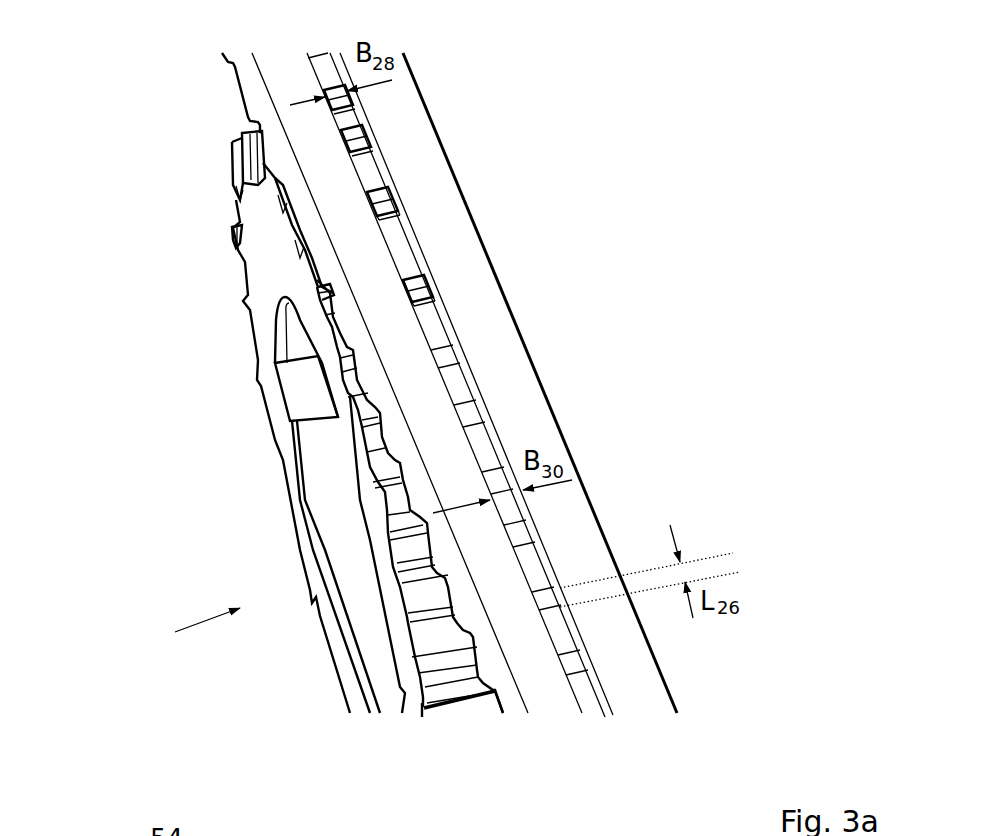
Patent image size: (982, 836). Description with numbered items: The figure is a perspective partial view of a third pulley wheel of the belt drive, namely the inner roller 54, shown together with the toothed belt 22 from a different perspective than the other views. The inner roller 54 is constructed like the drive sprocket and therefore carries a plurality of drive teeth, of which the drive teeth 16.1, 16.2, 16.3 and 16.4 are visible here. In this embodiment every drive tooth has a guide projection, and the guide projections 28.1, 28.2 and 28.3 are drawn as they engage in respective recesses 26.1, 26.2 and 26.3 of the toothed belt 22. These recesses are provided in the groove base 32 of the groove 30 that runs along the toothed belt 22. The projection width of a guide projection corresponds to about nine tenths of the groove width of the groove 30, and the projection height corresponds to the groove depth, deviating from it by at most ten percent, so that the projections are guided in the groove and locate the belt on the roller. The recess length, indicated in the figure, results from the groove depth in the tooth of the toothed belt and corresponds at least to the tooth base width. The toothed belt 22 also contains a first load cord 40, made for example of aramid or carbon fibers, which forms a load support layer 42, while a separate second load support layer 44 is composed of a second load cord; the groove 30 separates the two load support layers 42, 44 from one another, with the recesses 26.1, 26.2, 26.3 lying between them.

The drive tooth 16.1 is at (357, 422).
The drive tooth 16.2 is at (357, 333).
The drive tooth 16.3 is at (305, 235).
The drive tooth 16.4 is at (280, 180).
The toothed belt 22 is at (483, 347).
The recess 26.1 is at (437, 303).
The recess 26.2 is at (393, 223).
The recess 26.3 is at (357, 138).
The guide projection 28.1 is at (410, 283).
The guide projection 28.2 is at (372, 195).
The guide projection 28.3 is at (347, 93).
The groove 30 is at (482, 447).
The groove base 32 is at (455, 402).
The first load cord 40 is at (553, 713).
The load support layer 42 is at (528, 718).
The second load support layer 44 is at (652, 718).
The inner roller 54 is at (185, 636).